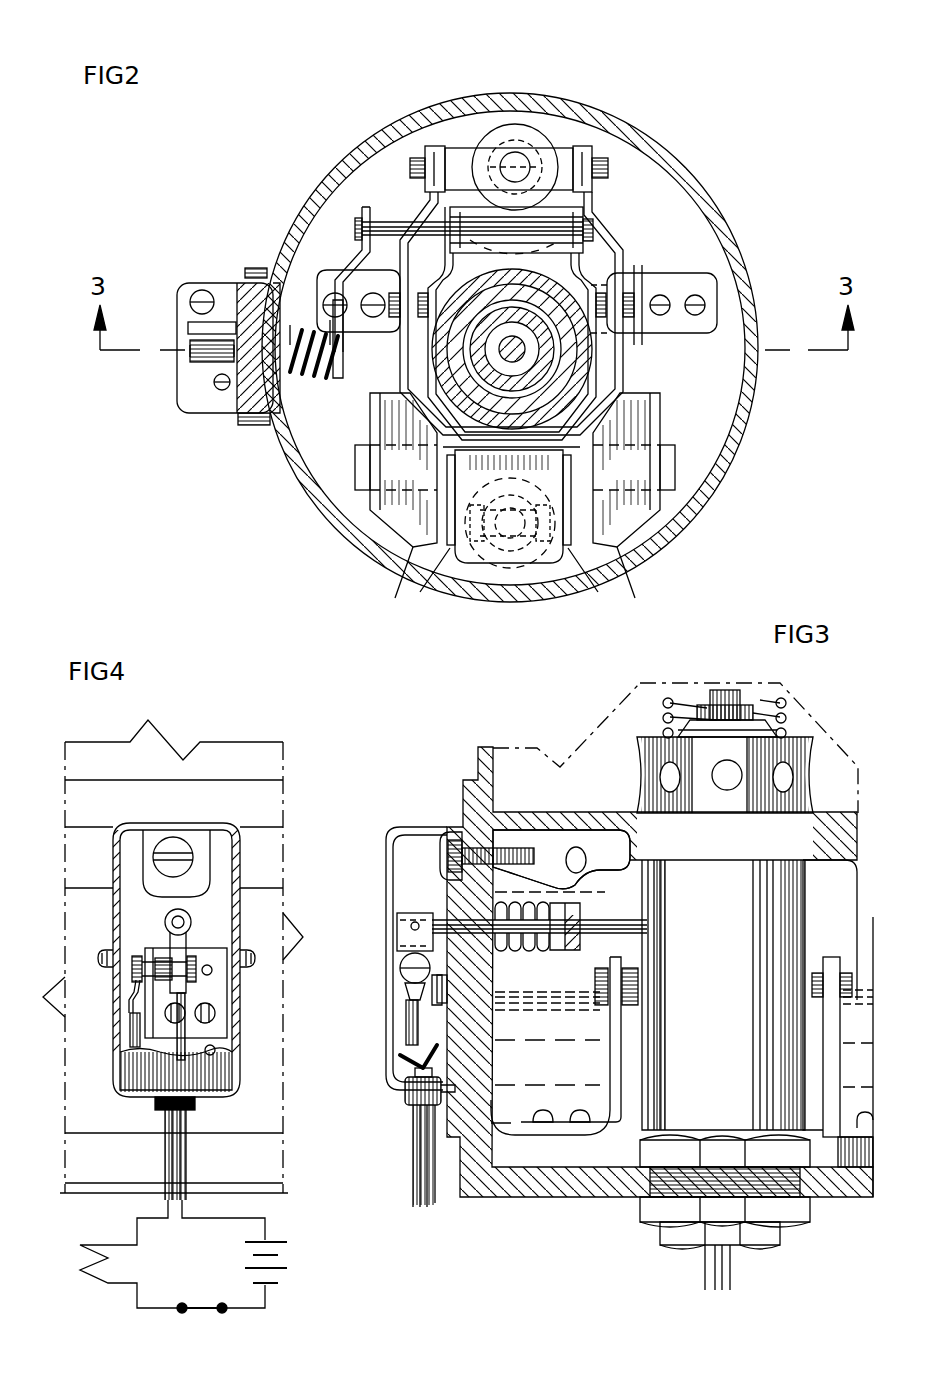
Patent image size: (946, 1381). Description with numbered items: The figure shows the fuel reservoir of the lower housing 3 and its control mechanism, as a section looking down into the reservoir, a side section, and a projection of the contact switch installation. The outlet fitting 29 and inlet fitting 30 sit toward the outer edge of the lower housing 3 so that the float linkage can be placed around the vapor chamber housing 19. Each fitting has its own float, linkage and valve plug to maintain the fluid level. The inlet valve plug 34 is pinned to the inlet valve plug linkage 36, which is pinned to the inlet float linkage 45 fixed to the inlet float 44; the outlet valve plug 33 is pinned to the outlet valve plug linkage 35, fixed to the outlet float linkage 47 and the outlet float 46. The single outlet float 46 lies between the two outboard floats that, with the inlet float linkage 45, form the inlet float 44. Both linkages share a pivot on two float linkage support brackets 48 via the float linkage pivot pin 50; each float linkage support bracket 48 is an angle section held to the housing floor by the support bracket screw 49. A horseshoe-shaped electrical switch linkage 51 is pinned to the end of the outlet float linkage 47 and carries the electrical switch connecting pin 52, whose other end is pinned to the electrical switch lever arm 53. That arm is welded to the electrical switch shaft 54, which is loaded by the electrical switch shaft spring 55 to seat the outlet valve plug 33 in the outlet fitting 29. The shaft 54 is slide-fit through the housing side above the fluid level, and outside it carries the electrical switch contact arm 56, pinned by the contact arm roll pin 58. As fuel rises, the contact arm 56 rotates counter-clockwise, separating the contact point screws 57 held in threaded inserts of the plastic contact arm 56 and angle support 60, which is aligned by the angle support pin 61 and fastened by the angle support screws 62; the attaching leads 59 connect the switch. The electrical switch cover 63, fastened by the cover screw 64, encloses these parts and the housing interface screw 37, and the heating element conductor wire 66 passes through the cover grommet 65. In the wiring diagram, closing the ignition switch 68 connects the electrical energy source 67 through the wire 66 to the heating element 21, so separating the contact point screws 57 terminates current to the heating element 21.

In FIG. 2, the lower housing 3 is at (725, 487).
In FIG. 3, the lower housing 3 is at (845, 1198).
In FIG. 2, the vapor chamber housing 19 is at (580, 300).
In FIG. 3, the vapor chamber housing 19 is at (640, 1120).
In FIG. 4, the heating element 21 is at (90, 1260).
In FIG. 2, the outlet fitting 29 is at (525, 565).
In FIG. 2, the inlet fitting 30 is at (494, 128).
In FIG. 2, the outlet valve plug 33 is at (508, 545).
In FIG. 2, the inlet valve plug 34 is at (518, 160).
In FIG. 2, the outlet valve plug linkage 35 is at (410, 562).
In FIG. 2, the inlet valve plug linkage 36 is at (425, 165).
In FIG. 3, the housing interface screw 37 is at (445, 852).
In FIG. 2, the inlet float 44 is at (365, 520).
In FIG. 2, the inlet float linkage 45 is at (362, 445).
In FIG. 3, the inlet float linkage 45 is at (858, 990).
In FIG. 2, the outlet float 46 is at (480, 560).
In FIG. 2, the outlet float linkage 47 is at (575, 280).
In FIG. 3, the outlet float linkage 47 is at (640, 983).
In FIG. 2, the float linkage support bracket 48 is at (705, 272).
In FIG. 3, the float linkage support bracket 48 is at (605, 1068).
In FIG. 2, the support bracket screw 49 is at (700, 302).
In FIG. 3, the support bracket screw 49 is at (543, 1110).
In FIG. 2, the float linkage pivot pin 50 is at (610, 168).
In FIG. 3, the float linkage pivot pin 50 is at (828, 957).
In FIG. 2, the electrical switch linkage 51 is at (462, 210).
In FIG. 2, the electrical switch connecting pin 52 is at (357, 226).
In FIG. 3, the electrical switch connecting pin 52 is at (638, 922).
In FIG. 2, the electrical switch lever arm 53 is at (360, 255).
In FIG. 3, the electrical switch lever arm 53 is at (558, 905).
In FIG. 2, the electrical switch shaft 54 is at (178, 348).
In FIG. 3, the electrical switch shaft 54 is at (412, 918).
In FIG. 2, the electrical switch shaft spring 55 is at (300, 388).
In FIG. 3, the electrical switch shaft spring 55 is at (505, 947).
In FIG. 2, the electrical switch contact arm 56 is at (212, 340).
In FIG. 3, the electrical switch contact arm 56 is at (412, 953).
In FIG. 4, the electrical switch contact arm 56 is at (170, 930).
In FIG. 4, the contact point screws 57 is at (125, 975).
In FIG. 3, the contact arm roll pin 58 is at (397, 935).
In FIG. 3, the attaching leads 59 is at (405, 1010).
In FIG. 4, the attaching leads 59 is at (128, 1030).
In FIG. 2, the angle support 60 is at (232, 330).
In FIG. 4, the angle support 60 is at (215, 945).
In FIG. 4, the angle support pin 61 is at (212, 972).
In FIG. 4, the angle support screws 62 is at (212, 1020).
In FIG. 2, the electrical switch cover 63 is at (178, 395).
In FIG. 3, the electrical switch cover 63 is at (416, 958).
In FIG. 4, the electrical switch cover 63 is at (240, 1075).
In FIG. 2, the cover screw 64 is at (240, 422).
In FIG. 4, the cover screw 64 is at (100, 957).
In FIG. 3, the cover grommet 65 is at (407, 1110).
In FIG. 3, the heating element conductor wire 66 is at (437, 1190).
In FIG. 4, the heating element conductor wire 66 is at (187, 1150).
In FIG. 4, the electrical energy source 67 is at (275, 1243).
In FIG. 4, the ignition switch 68 is at (210, 1305).